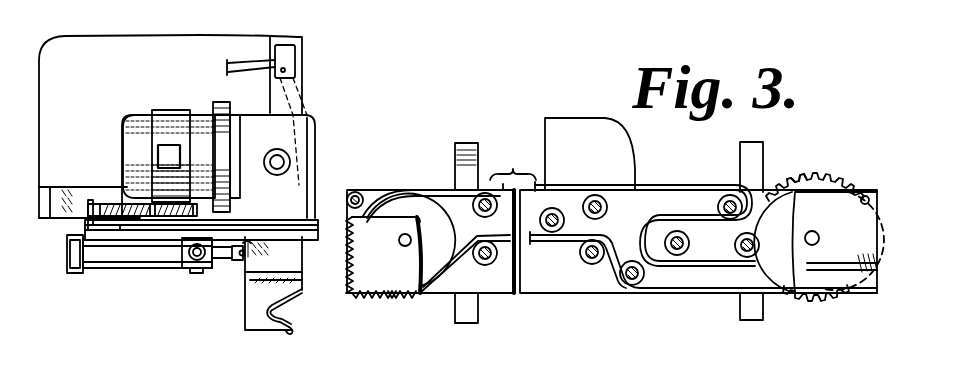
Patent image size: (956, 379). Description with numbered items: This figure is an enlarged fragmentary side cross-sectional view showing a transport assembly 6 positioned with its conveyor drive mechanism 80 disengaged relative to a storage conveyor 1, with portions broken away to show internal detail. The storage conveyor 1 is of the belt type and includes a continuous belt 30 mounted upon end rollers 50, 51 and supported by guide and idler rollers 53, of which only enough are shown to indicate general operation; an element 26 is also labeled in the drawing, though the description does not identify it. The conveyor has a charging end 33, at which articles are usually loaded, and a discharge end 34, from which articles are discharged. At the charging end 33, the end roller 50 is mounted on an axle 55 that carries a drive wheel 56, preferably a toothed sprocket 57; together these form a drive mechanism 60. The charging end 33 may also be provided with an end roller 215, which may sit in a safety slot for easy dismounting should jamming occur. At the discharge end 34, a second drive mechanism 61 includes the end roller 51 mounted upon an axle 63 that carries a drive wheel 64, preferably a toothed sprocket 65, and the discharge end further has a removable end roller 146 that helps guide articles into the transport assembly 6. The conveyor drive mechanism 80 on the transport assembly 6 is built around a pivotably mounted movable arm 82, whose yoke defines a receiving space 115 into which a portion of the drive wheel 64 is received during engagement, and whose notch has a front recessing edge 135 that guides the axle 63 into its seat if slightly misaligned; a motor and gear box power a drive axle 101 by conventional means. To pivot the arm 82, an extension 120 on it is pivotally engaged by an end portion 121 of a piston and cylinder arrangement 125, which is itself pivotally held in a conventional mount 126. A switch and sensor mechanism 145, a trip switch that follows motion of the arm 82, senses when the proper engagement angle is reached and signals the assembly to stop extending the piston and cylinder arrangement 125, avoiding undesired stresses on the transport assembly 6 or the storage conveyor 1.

The first storage conveyor 1 is at (656, 181).
The transport assembly 6 is at (198, 43).
The guide rail 26 is at (448, 188).
The continuous belt 30 is at (728, 187).
The charging end 33 is at (852, 192).
The discharge end 34 is at (393, 189).
The end roller 50 is at (781, 270).
The end roller 51 is at (450, 230).
The guide and idler rollers 53 is at (608, 207).
The axle 55 is at (828, 228).
The drive wheel 56 is at (790, 186).
The toothed sprocket 57 is at (812, 186).
The drive mechanism 60 is at (827, 300).
The second drive mechanism 61 is at (393, 298).
The axle 63 is at (399, 240).
The drive wheel 64 is at (350, 273).
The toothed sprocket 65 is at (346, 258).
The conveyor drive mechanism 80 is at (130, 117).
The movable arm 82 is at (250, 323).
The drive axle 101 is at (280, 171).
The receiving space 115 is at (290, 310).
The extension 120 is at (252, 243).
The end portion 121 is at (232, 261).
The piston and cylinder arrangement 125 is at (110, 273).
The mount 126 is at (188, 268).
The front recessing edge 135 is at (297, 327).
The switch and sensor mechanism 145 is at (297, 60).
The removable end roller 146 is at (355, 193).
The end roller 215 is at (872, 216).